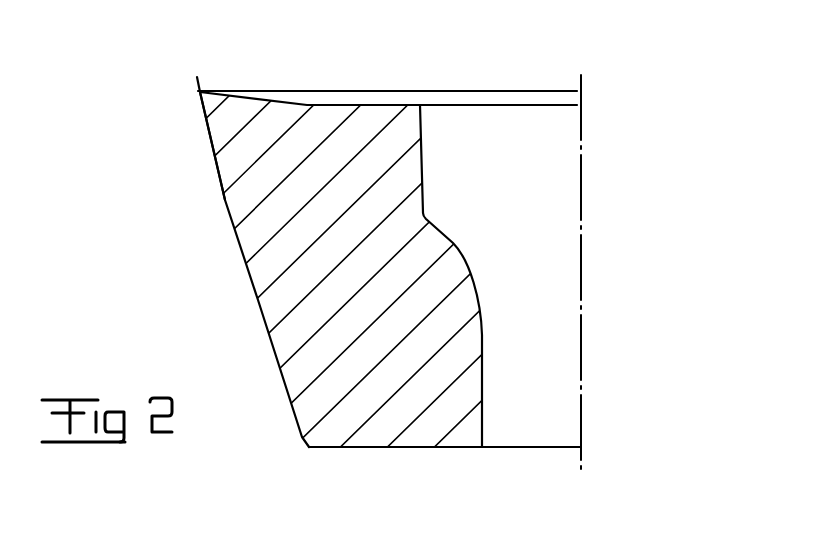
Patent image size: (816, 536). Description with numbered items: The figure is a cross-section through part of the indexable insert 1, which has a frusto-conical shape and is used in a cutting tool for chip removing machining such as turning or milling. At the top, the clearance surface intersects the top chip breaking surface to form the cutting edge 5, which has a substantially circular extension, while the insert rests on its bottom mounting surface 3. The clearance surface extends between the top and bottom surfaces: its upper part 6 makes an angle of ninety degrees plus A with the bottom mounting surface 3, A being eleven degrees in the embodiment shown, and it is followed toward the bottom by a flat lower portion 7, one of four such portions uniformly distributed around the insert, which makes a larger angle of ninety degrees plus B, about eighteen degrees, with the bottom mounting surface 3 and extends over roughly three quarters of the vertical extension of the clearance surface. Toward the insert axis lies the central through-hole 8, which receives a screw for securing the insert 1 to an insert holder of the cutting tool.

The indexable insert 1 is at (412, 84).
The bottom mounting surface 3 is at (375, 448).
The cutting edge 5 is at (193, 62).
The upper part of the clearance surface 6 is at (207, 130).
The lower portion of the clearance surface 7 is at (257, 281).
The central through-hole 8 is at (520, 153).